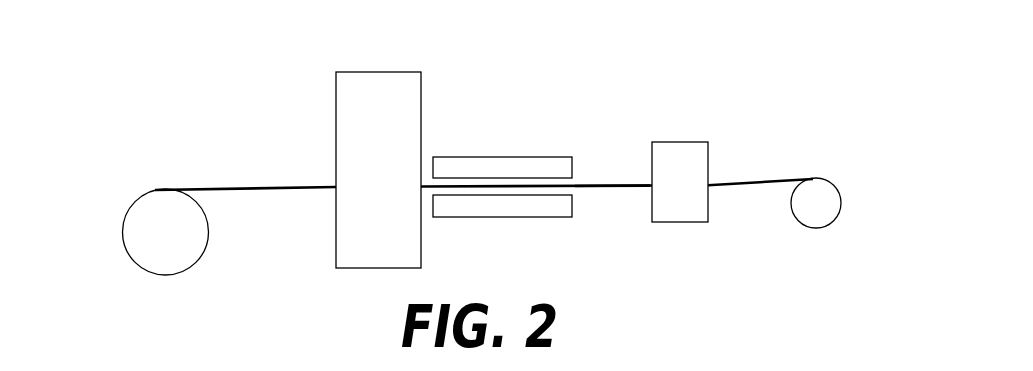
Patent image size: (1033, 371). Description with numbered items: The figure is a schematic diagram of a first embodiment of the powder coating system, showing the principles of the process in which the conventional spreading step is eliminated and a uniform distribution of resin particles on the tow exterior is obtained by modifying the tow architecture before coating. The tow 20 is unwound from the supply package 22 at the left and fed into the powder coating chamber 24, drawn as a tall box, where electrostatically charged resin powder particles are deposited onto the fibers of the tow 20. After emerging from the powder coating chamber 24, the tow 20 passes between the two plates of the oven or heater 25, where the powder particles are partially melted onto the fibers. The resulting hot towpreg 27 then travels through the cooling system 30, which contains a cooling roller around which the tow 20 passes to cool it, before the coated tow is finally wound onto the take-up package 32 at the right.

The tow 20 is at (237, 187).
The supply package 22 is at (137, 202).
The powder coating chamber 24 is at (422, 112).
The oven or heater 25 is at (522, 133).
The hot towpreg 27 is at (602, 188).
The cooling system 30 is at (675, 142).
The take-up package 32 is at (813, 228).